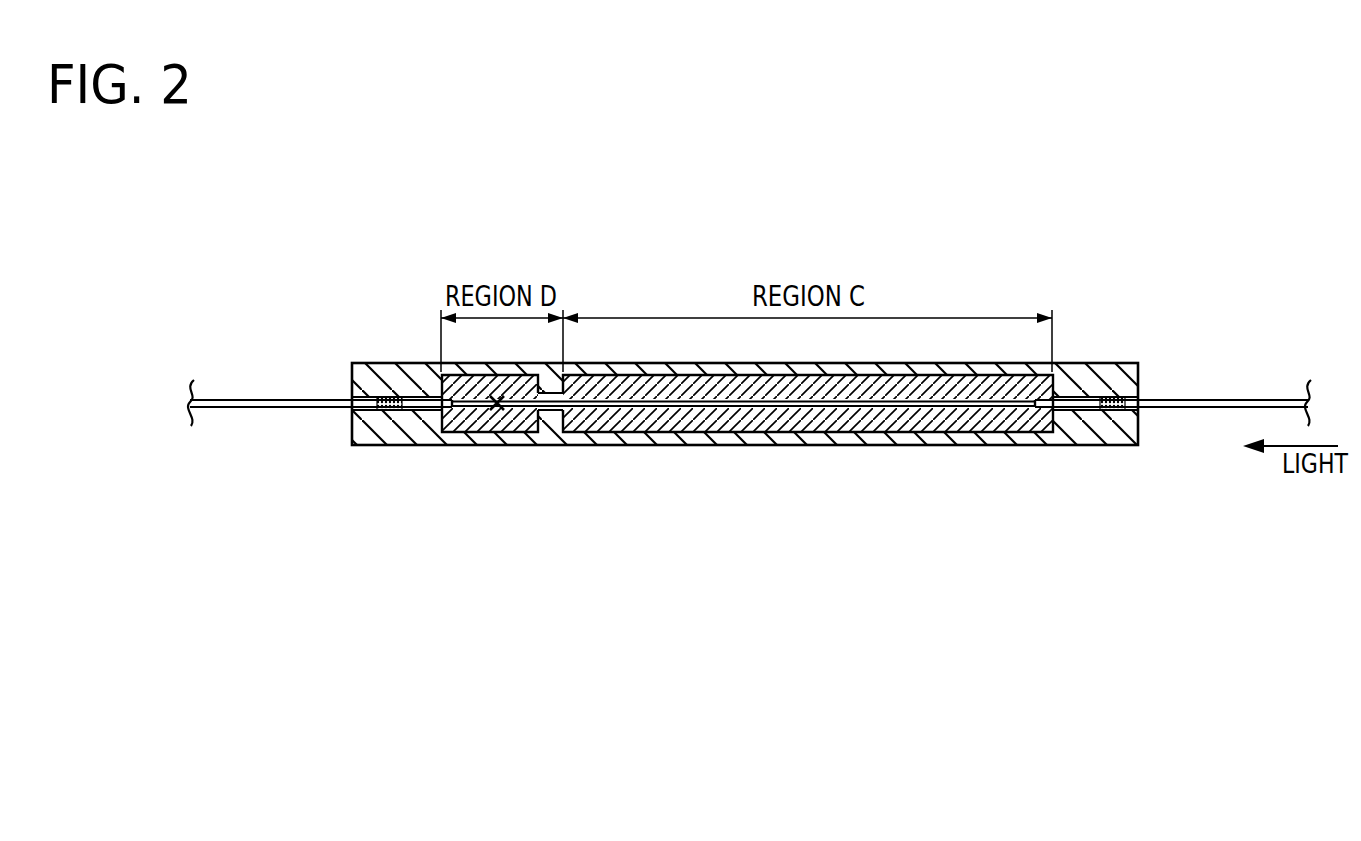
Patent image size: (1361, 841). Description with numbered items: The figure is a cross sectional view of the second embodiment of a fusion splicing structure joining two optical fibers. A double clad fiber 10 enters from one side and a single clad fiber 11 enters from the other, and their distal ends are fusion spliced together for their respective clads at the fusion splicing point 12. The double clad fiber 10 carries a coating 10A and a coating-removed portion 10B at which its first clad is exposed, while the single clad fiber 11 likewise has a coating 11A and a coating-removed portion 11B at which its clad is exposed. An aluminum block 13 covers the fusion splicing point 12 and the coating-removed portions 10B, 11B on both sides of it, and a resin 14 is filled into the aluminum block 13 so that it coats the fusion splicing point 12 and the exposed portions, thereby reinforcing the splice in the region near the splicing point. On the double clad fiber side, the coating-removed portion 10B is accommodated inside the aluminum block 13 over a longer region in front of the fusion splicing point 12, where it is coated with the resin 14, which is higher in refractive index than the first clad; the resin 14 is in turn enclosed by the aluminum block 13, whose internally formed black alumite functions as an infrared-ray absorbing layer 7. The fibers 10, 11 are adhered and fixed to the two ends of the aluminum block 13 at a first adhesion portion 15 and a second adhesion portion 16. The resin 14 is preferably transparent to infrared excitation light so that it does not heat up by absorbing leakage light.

The infrared-ray absorbing layer 7 is at (718, 410).
The double clad fiber 10 is at (1255, 398).
The coating 10A is at (1180, 398).
The coating-removed portion 10B is at (992, 408).
The single clad fiber 11 is at (230, 398).
The coating 11A is at (308, 398).
The coating-removed portion 11B is at (467, 408).
The fusion splicing point 12 is at (497, 408).
The aluminum block 13 is at (378, 440).
The resin 14 is at (527, 432).
The first adhesion portion 15 is at (1113, 397).
The second adhesion portion 16 is at (397, 397).